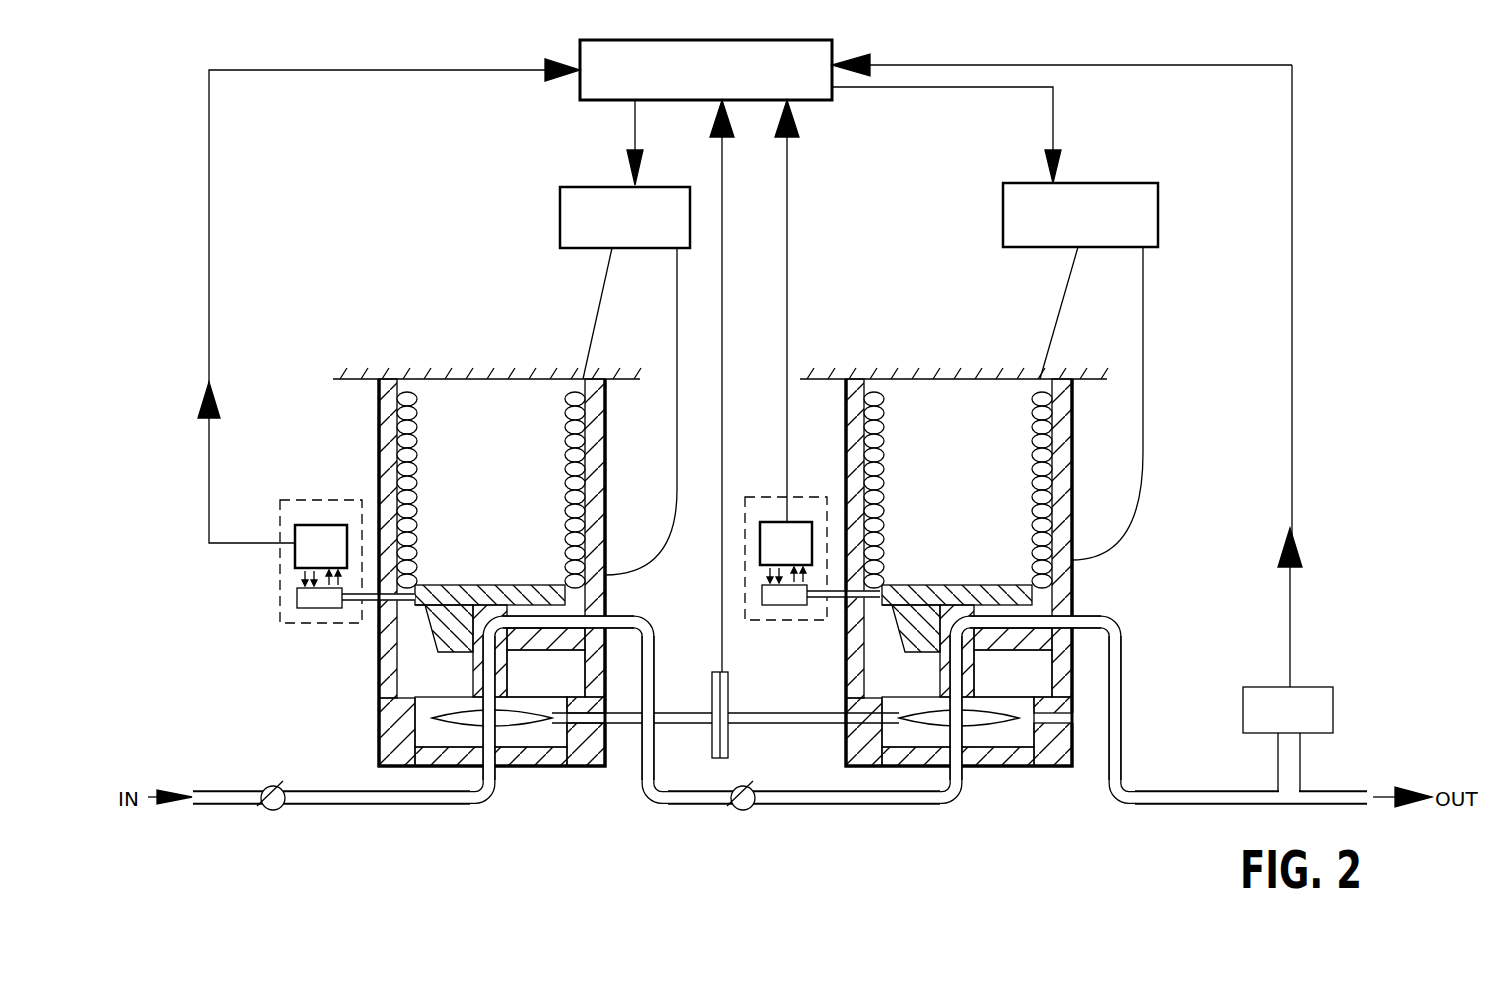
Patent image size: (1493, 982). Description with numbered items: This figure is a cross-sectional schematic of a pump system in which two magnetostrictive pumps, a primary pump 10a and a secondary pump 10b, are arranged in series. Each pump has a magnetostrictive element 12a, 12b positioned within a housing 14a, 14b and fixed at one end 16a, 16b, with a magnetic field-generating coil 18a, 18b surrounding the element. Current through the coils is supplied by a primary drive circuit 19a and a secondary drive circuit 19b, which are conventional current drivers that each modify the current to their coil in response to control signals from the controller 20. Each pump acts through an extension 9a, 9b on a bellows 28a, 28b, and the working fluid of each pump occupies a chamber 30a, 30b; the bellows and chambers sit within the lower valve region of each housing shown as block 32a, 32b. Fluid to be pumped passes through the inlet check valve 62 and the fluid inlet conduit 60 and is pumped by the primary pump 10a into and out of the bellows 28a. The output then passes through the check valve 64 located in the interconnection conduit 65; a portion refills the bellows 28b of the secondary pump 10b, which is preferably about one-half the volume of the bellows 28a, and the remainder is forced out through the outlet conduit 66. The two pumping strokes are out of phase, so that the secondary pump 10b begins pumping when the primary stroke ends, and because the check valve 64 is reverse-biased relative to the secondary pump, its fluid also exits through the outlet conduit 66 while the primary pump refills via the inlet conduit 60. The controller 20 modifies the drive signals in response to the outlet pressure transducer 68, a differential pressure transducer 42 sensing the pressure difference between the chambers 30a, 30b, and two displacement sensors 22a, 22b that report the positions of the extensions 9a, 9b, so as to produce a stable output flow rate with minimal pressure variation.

The extension 9a is at (465, 663).
The extension 9b is at (935, 659).
The primary pump 10a is at (340, 466).
The secondary pump 10b is at (1200, 462).
The magnetostrictive element 12a is at (510, 497).
The magnetostrictive element 12b is at (976, 497).
The housing 14a is at (605, 470).
The housing 14b is at (1073, 470).
The fixed end 16a is at (433, 378).
The fixed end 16b is at (900, 378).
The magnetic field-generating coil 18a is at (590, 430).
The magnetic field-generating coil 18b is at (1060, 430).
The primary drive circuit 19a is at (560, 230).
The secondary drive circuit 19b is at (1003, 230).
The controller 20 is at (580, 88).
The displacement sensor 22a is at (290, 630).
The displacement sensor 22b is at (783, 622).
The bellows 28a is at (498, 735).
The bellows 28b is at (972, 735).
The chamber 30a is at (570, 706).
The chamber 30b is at (1038, 708).
The primary outlet valve block 32a is at (555, 737).
The secondary outlet valve block 32b is at (1020, 737).
The differential pressure transducer 42 is at (728, 690).
The fluid inlet conduit 60 is at (338, 800).
The inlet check valve 62 is at (267, 812).
The check valve 64 is at (743, 803).
The interconnection conduit 65 is at (828, 798).
The outlet conduit 66 is at (1143, 795).
The outlet pressure transducer 68 is at (1320, 707).